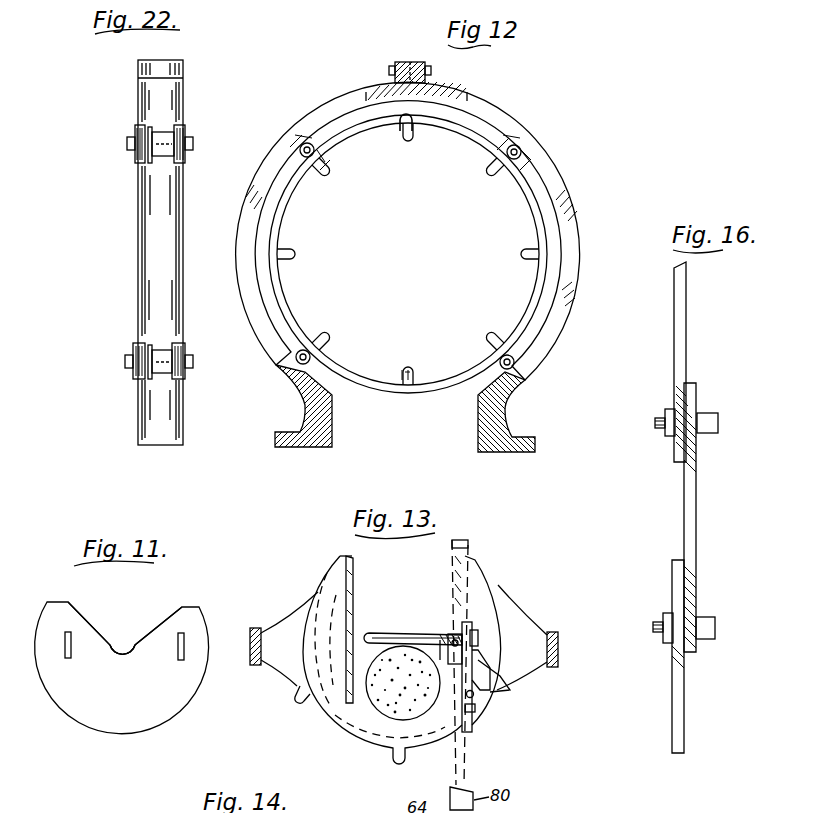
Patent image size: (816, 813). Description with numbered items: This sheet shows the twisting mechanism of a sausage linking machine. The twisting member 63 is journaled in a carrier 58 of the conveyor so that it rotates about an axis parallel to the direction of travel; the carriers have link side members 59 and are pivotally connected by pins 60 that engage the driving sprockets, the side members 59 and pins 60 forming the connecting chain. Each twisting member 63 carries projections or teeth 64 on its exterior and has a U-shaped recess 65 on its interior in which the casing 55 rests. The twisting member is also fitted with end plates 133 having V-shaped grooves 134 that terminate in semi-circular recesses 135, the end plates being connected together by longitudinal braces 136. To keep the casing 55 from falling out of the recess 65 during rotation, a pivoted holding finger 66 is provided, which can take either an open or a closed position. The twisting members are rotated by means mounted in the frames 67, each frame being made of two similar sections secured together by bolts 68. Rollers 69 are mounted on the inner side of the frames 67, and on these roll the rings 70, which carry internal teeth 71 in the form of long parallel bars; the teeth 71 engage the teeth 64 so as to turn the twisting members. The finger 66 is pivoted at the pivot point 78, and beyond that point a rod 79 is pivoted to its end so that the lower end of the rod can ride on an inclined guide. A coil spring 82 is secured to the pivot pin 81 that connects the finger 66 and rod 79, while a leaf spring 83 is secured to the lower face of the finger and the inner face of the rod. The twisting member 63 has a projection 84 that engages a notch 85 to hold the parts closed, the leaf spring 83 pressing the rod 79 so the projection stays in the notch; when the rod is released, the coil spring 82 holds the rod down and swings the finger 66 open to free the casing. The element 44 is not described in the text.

In FIG. 13, the arm 44 is at (398, 634).
In FIG. 13, the casing 55 is at (385, 690).
In FIG. 13, the carrier 58 is at (520, 640).
In FIG. 16, the link side member 59 is at (690, 334).
In FIG. 13, the link side member 59 is at (558, 648).
In FIG. 16, the pin 60 is at (706, 422).
In FIG. 13, the twisting member 63 is at (332, 697).
In FIG. 13, the teeth 64 is at (508, 690).
In FIG. 13, the U-shaped recess 65 is at (400, 585).
In FIG. 13, the holding finger 66 is at (462, 553).
In FIG. 22, the frame 67 is at (168, 103).
In FIG. 12, the frame 67 is at (242, 232).
In FIG. 12, the bolt 68 is at (391, 70).
In FIG. 22, the roller 69 is at (160, 150).
In FIG. 12, the roller 69 is at (304, 143).
In FIG. 12, the ring 70 is at (456, 135).
In FIG. 12, the internal teeth 71 is at (404, 133).
In FIG. 13, the pivot point 78 is at (452, 638).
In FIG. 13, the rod 79 is at (472, 730).
In FIG. 13, the pivot pin 81 is at (478, 634).
In FIG. 13, the coil spring 82 is at (486, 665).
In FIG. 13, the leaf spring 83 is at (440, 646).
In FIG. 13, the projection 84 is at (476, 696).
In FIG. 13, the notch 85 is at (476, 708).
In FIG. 11, the end plate 133 is at (138, 694).
In FIG. 11, the V-shaped groove 134 is at (145, 615).
In FIG. 11, the semi-circular recess 135 is at (122, 652).
In FIG. 11, the longitudinal brace 136 is at (184, 640).